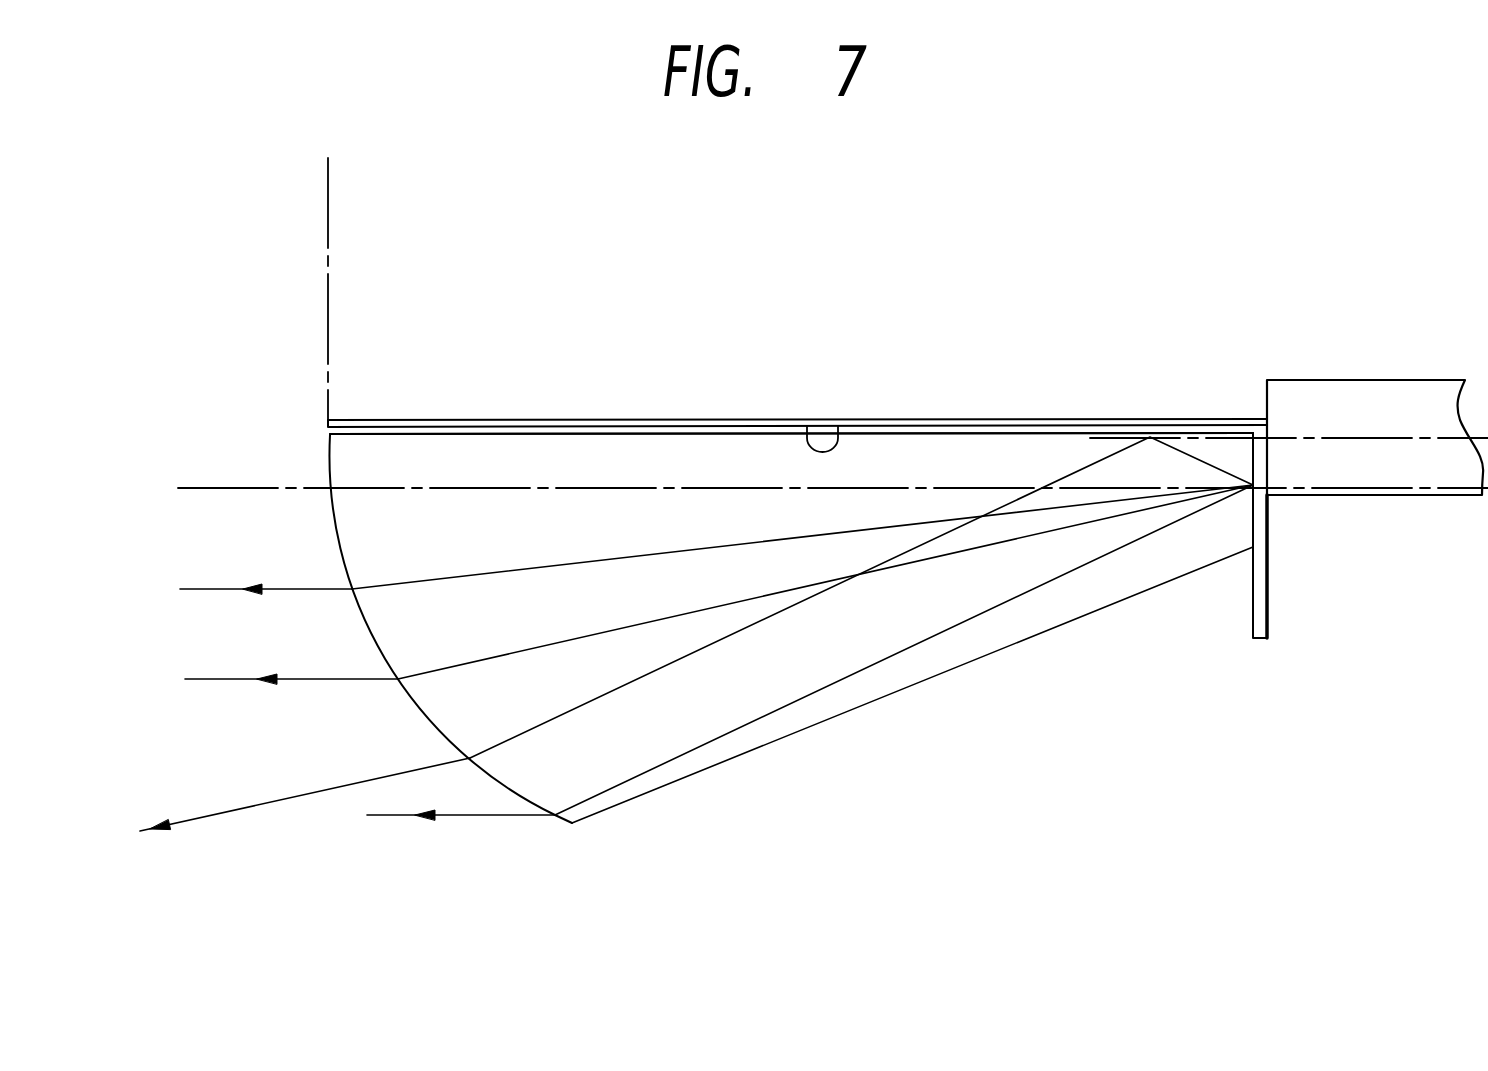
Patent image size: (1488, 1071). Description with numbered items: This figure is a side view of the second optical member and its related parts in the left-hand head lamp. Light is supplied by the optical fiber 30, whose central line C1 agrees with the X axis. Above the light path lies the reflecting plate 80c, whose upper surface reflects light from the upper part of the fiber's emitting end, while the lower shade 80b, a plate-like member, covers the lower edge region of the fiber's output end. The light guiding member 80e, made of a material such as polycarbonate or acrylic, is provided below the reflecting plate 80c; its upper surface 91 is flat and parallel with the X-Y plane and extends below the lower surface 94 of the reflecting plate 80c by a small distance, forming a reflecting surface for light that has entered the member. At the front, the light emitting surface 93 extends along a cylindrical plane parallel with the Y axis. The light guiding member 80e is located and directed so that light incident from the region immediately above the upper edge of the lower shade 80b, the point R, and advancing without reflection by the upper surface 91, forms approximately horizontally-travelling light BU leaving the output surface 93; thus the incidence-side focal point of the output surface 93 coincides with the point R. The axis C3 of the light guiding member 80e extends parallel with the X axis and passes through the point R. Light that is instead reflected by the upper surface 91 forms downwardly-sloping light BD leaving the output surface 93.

The optical fiber 30 is at (1372, 404).
The lower shade 80b is at (1268, 617).
The reflecting plate 80c is at (1013, 418).
The second optical member (light guiding member) 80e is at (497, 462).
The upper surface of light guiding member 91 is at (650, 435).
The light emitting surface (light output surface) 93 is at (415, 705).
The lower surface of reflecting plate 94 is at (838, 430).
The central line (axis) of optical fiber C1 is at (1425, 440).
The axis (central line) of light guiding member C3 is at (202, 481).
The point R is at (1252, 490).
The horizontally-travelling light BU is at (205, 678).
The downwardly-sloping light BD is at (212, 812).